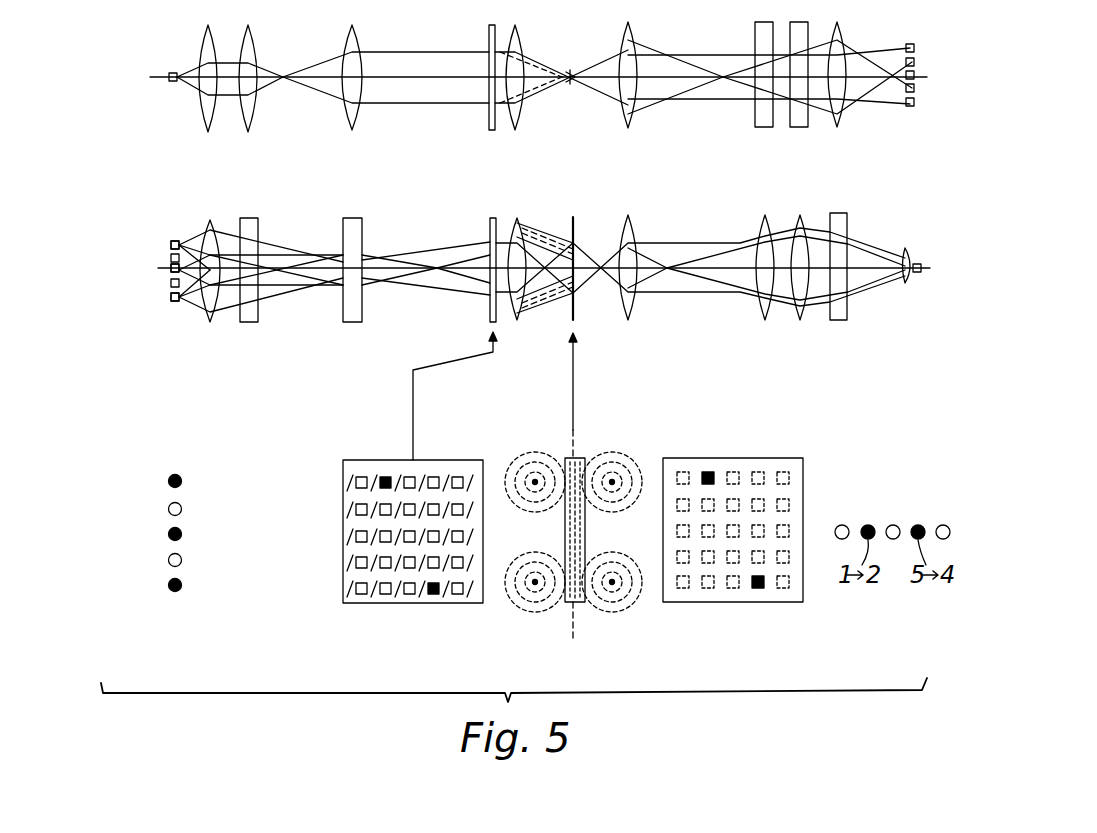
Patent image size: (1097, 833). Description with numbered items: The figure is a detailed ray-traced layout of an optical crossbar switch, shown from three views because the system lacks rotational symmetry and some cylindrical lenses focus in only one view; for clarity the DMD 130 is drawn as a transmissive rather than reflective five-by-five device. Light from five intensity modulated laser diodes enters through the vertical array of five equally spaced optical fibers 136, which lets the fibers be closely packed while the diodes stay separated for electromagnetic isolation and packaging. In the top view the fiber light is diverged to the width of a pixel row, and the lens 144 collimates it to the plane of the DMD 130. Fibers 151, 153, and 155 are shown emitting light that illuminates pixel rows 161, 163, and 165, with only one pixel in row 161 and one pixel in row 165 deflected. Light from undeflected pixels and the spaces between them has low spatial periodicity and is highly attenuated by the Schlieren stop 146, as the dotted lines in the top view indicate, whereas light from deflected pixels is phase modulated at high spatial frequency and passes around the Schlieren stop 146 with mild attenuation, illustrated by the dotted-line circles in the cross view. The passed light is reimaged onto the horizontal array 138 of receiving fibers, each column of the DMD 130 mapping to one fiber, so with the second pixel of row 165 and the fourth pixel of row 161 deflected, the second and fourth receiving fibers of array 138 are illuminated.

The DMD 130 is at (367, 460).
The vertical array of optical fibers 136 is at (176, 312).
The horizontal array of receiving optical fibers 138 is at (915, 292).
The lens 144 is at (356, 117).
The Schlieren stop 146 is at (573, 218).
The fiber 151 is at (170, 245).
The fiber 153 is at (170, 268).
The fiber 155 is at (170, 297).
The pixel row 161 is at (333, 589).
The pixel row 163 is at (333, 537).
The pixel row 165 is at (333, 483).